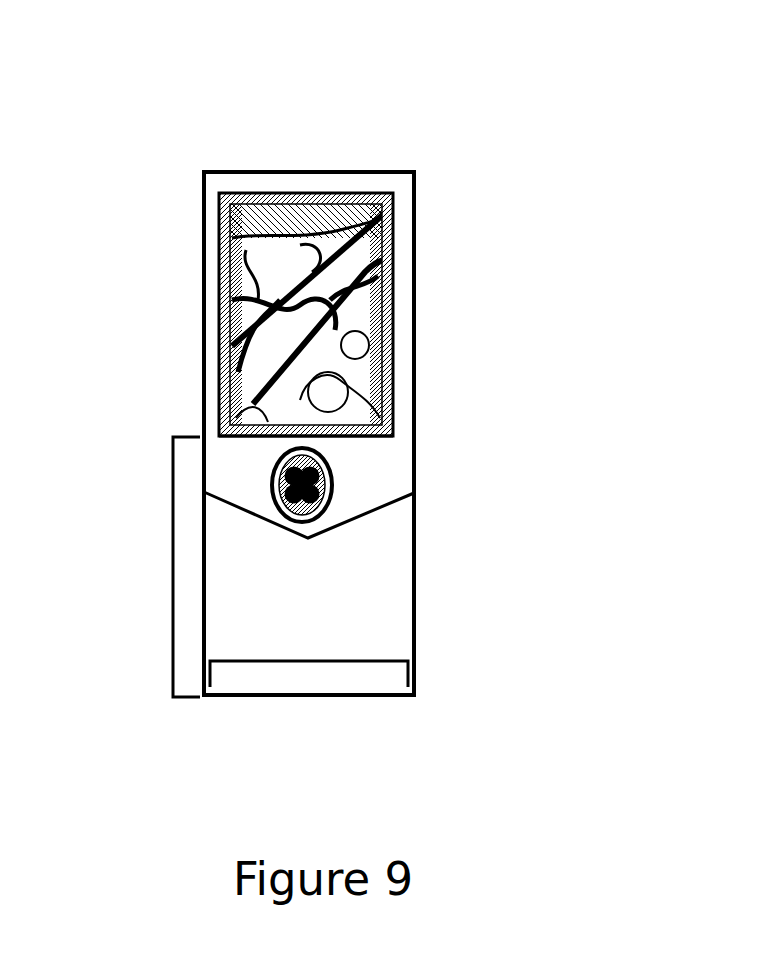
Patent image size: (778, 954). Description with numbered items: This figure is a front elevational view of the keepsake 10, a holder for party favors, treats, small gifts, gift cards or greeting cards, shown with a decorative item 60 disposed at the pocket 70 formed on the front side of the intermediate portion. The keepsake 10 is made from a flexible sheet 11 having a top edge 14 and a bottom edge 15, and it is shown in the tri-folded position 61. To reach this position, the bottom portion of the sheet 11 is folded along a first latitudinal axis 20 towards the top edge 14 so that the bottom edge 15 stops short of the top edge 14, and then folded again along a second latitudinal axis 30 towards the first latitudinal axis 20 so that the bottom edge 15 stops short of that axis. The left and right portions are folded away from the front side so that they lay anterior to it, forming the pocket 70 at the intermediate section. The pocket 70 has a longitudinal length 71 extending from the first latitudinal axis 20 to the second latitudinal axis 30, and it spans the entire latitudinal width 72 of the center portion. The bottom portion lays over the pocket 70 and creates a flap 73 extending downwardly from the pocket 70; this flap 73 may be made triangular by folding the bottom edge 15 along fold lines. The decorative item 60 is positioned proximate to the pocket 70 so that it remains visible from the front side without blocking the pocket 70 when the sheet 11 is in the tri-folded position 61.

The keepsake 10 is at (195, 83).
The flexible sheet 11 is at (423, 237).
The top edge 14 is at (355, 170).
The bottom edge 15 is at (380, 507).
The first latitudinal axis 20 is at (347, 697).
The second latitudinal axis 30 is at (368, 436).
The decorative item 60 is at (293, 250).
The tri-folded position 61 is at (192, 320).
The pocket 70 is at (403, 352).
The longitudinal length 71 is at (173, 567).
The latitudinal width 72 is at (307, 661).
The flap 73 is at (378, 472).